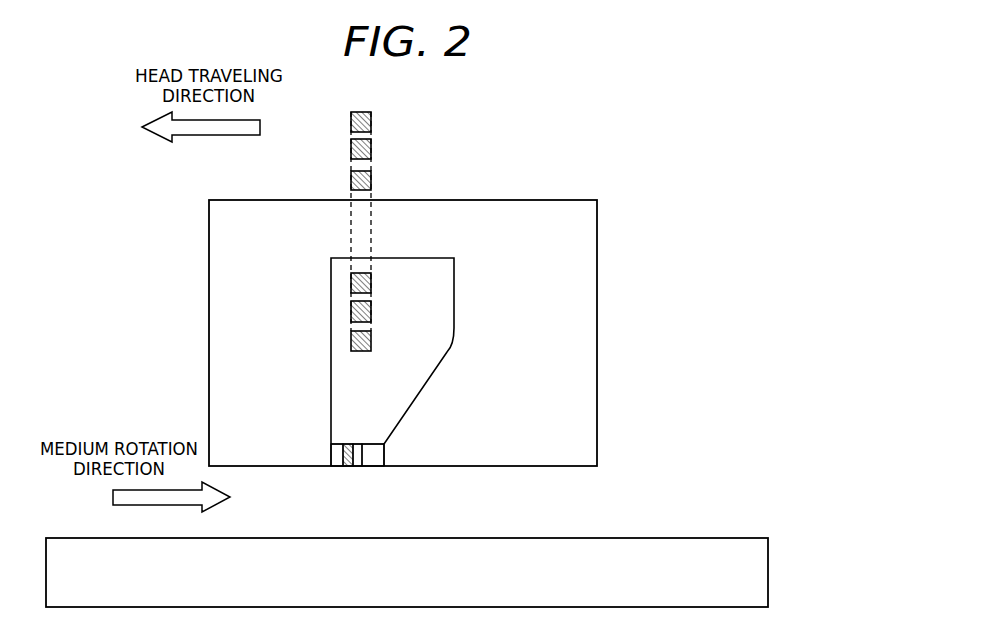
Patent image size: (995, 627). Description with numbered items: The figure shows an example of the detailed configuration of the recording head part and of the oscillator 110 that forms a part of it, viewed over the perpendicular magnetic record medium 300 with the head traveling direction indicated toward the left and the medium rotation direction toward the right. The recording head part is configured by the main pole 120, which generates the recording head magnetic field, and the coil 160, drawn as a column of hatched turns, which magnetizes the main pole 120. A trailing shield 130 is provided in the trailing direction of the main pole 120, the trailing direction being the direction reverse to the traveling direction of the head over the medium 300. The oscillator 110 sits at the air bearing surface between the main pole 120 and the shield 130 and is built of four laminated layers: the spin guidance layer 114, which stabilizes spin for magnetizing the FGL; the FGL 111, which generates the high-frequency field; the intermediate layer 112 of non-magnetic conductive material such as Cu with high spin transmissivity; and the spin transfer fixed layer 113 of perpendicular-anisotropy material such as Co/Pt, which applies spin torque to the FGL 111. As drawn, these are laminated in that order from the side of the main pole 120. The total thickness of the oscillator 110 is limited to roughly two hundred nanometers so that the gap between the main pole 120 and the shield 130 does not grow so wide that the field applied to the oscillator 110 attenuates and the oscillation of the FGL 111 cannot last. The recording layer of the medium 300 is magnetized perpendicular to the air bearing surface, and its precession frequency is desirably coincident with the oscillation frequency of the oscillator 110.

The oscillator 110 is at (365, 489).
The FGL 111 is at (348, 456).
The intermediate layer 112 is at (358, 456).
The spin transfer fixed layer 113 is at (398, 473).
The spin guidance layer 114 is at (336, 454).
The main pole 120 is at (253, 467).
The trailing shield 130 is at (485, 458).
The coil 160 is at (368, 181).
The magnetic record medium 300 is at (660, 538).